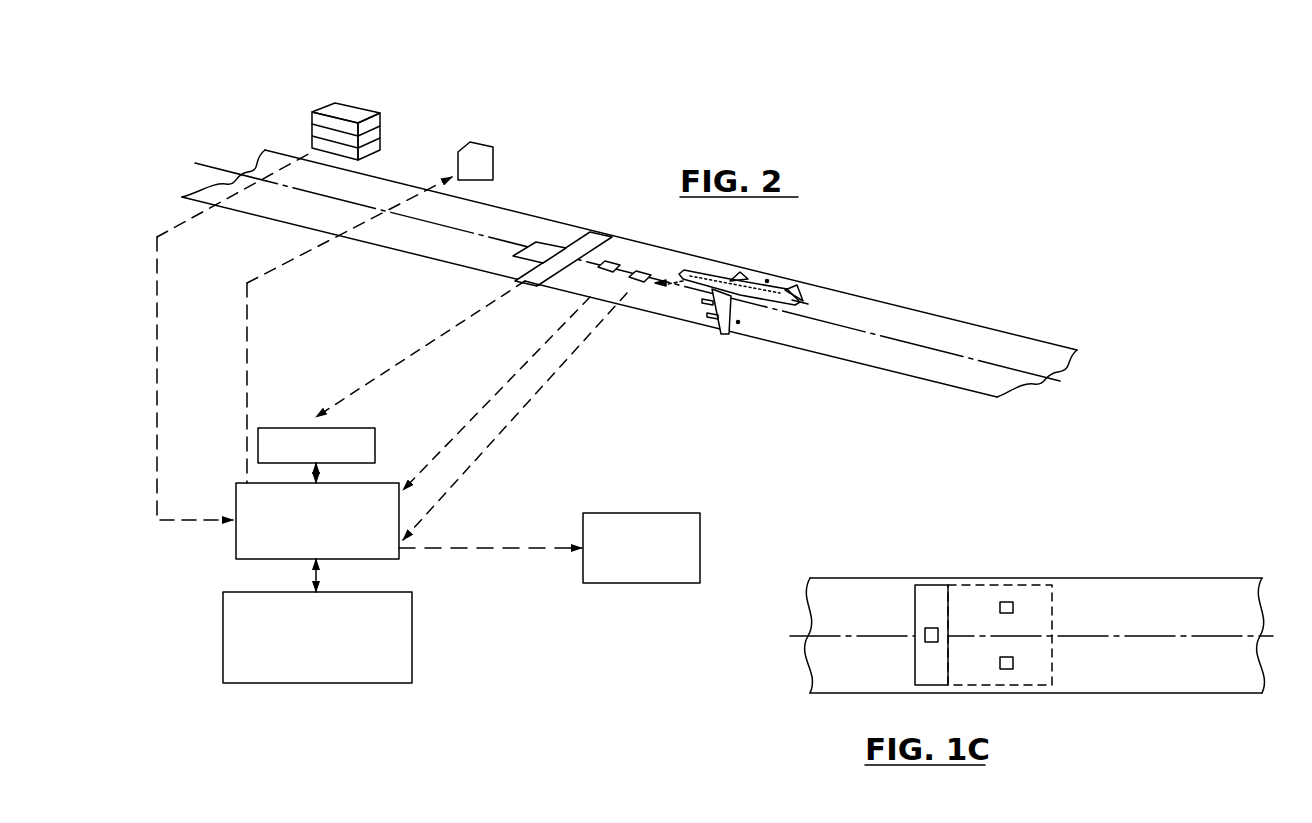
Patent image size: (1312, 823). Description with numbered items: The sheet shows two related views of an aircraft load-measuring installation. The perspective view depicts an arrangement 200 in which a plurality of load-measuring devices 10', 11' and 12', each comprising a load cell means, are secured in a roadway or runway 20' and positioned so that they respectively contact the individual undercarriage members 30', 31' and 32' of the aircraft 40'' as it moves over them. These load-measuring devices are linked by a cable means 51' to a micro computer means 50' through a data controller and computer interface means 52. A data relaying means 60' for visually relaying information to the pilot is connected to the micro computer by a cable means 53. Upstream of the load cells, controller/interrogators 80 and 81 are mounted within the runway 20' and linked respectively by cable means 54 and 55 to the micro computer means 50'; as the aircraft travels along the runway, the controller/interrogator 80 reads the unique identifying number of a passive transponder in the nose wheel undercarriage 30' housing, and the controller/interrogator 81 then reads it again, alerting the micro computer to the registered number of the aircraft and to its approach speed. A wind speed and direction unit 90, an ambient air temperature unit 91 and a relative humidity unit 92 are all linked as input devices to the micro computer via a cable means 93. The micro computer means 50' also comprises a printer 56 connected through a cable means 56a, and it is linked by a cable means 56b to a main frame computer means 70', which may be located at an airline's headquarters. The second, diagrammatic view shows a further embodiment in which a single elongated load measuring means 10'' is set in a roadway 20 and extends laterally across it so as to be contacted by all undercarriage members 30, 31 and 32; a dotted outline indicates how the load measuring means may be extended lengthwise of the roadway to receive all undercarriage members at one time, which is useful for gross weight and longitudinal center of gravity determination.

In FIG. 2, the arrangement 200 is at (1022, 182).
In FIG. 2, the roadway or runway 20' is at (629, 273).
In FIG. 1C, the roadway 20 is at (1031, 662).
In FIG. 2, the load-measuring device 10' is at (557, 217).
In FIG. 1C, the load measuring means 10'' is at (957, 606).
In FIG. 2, the load-measuring device 11' is at (578, 239).
In FIG. 2, the load-measuring device 12' is at (527, 309).
In FIG. 2, the controller/interrogator 80 is at (640, 272).
In FIG. 2, the controller/interrogator 81 is at (613, 263).
In FIG. 2, the nose wheel undercarriage 30' is at (670, 321).
In FIG. 1C, the undercarriage member 30 is at (894, 674).
In FIG. 2, the undercarriage member 31' is at (764, 249).
In FIG. 1C, the undercarriage member 31 is at (1026, 570).
In FIG. 2, the undercarriage member 32' is at (760, 353).
In FIG. 1C, the undercarriage member 32 is at (1030, 689).
In FIG. 2, the aircraft 40'' is at (772, 287).
In FIG. 2, the micro computer means 50' is at (327, 498).
In FIG. 2, the data controller and computer interface means 52 is at (289, 437).
In FIG. 2, the cable means 51' is at (420, 349).
In FIG. 2, the cable means 53 is at (273, 269).
In FIG. 2, the cable means 54 is at (510, 421).
In FIG. 2, the cable means 55 is at (462, 428).
In FIG. 2, the printer 56 is at (659, 522).
In FIG. 2, the cable means 56a is at (530, 551).
In FIG. 2, the cable means 56b is at (316, 578).
In FIG. 2, the data relaying means 60' is at (506, 159).
In FIG. 2, the main frame computer means 70' is at (347, 631).
In FIG. 2, the wind speed and direction unit 90 is at (353, 130).
In FIG. 2, the ambient air temperature unit 91 is at (350, 141).
In FIG. 2, the relative humidity unit 92 is at (328, 147).
In FIG. 2, the cable means 93 is at (158, 252).